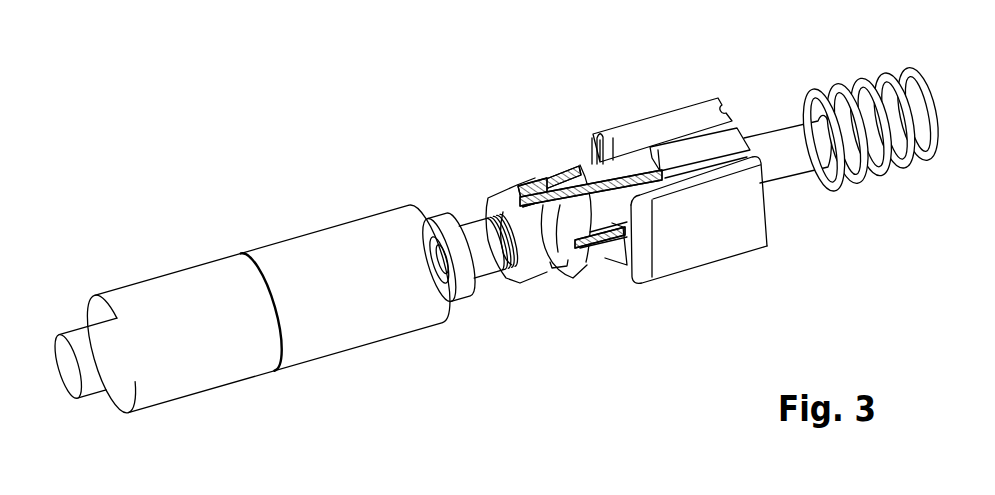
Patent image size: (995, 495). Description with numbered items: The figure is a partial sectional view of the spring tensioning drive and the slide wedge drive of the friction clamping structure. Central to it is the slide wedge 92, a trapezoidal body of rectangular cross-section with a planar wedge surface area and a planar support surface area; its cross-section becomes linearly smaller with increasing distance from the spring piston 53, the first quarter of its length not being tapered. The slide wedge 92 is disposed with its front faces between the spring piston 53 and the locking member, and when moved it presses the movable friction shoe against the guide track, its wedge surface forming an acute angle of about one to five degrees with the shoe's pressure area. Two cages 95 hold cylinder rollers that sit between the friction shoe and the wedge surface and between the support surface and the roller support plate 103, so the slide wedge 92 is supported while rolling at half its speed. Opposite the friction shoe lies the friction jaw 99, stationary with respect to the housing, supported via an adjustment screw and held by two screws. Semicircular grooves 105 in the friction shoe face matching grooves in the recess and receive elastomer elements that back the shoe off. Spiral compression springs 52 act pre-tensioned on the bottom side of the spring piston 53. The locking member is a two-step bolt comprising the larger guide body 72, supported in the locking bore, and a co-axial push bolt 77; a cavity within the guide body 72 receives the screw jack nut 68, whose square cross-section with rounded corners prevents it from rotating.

The spiral compression springs 52 is at (883, 177).
The spring piston 53 is at (787, 158).
The screw jack nut 68 is at (572, 223).
The guide body 72 is at (531, 281).
The push bolt 77 is at (610, 225).
The slide wedge 92 is at (710, 150).
The cages 95 is at (692, 175).
The friction jaw 99 is at (657, 132).
The roller support plate 103 is at (691, 250).
The semicircular grooves 105 is at (596, 136).